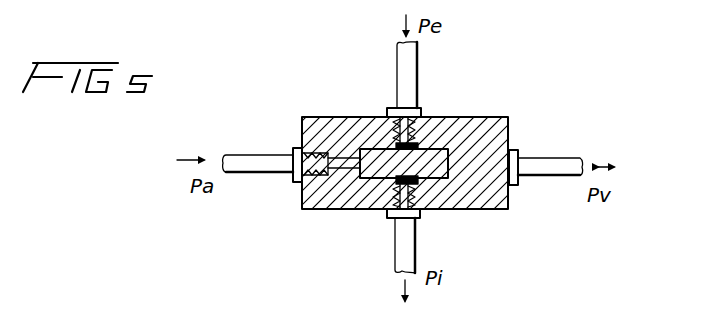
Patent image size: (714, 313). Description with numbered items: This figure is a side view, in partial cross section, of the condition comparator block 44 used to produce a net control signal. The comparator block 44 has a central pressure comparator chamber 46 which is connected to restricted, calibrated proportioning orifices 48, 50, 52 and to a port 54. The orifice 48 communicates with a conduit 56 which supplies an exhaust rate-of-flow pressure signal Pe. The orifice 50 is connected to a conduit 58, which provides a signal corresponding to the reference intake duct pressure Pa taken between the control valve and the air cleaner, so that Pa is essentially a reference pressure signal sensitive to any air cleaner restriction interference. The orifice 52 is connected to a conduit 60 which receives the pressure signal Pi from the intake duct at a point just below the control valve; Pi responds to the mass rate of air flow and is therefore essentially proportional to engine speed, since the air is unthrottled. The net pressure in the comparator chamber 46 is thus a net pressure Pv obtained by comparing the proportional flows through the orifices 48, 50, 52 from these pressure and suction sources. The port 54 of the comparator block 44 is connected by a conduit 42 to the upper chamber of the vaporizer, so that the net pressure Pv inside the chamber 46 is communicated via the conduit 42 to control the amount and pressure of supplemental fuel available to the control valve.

The conduit 42 is at (563, 160).
The comparator block 44 is at (480, 112).
The central pressure comparator chamber 46 is at (368, 158).
The proportioning orifice 48 is at (419, 117).
The proportioning orifice 50 is at (314, 178).
The proportioning orifice 52 is at (418, 196).
The port 54 is at (490, 169).
The conduit 56 is at (406, 72).
The conduit 58 is at (253, 162).
The conduit 60 is at (402, 243).